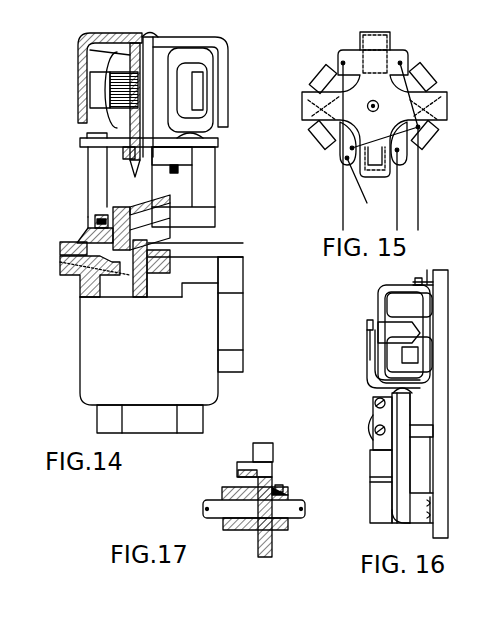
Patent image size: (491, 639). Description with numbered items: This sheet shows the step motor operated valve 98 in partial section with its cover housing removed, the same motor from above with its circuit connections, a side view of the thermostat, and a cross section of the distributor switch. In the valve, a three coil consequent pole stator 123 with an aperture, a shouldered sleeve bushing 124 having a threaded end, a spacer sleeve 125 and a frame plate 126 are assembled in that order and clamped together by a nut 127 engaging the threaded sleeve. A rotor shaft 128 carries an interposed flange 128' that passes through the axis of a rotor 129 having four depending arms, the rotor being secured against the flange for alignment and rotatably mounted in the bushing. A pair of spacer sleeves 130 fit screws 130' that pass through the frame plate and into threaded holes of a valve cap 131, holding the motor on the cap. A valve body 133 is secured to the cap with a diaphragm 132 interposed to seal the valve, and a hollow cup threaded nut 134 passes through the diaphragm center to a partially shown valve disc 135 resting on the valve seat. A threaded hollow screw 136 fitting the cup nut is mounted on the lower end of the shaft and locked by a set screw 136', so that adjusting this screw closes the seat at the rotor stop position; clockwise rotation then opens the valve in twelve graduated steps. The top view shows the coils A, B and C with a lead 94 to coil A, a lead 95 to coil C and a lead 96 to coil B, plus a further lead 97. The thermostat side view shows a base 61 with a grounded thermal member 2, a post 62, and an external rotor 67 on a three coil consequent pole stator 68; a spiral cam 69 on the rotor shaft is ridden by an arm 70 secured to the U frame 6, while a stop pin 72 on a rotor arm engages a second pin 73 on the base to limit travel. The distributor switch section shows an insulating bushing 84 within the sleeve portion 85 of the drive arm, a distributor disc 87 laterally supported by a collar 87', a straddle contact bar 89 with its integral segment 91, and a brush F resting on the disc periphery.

In FIG. 14, the rotor 129 is at (98, 33).
In FIG. 14, the interposed flange 128' is at (136, 23).
In FIG. 14, the shouldered sleeve bushing 124 is at (90, 50).
In FIG. 14, the rotor shaft 128 is at (97, 97).
In FIG. 14, the three coil consequent pole stator 123 is at (100, 87).
In FIG. 15, the three coil consequent pole stator 123 is at (427, 78).
In FIG. 14, the spacer sleeve 125 is at (130, 118).
In FIG. 14, the frame plate 126 is at (217, 143).
In FIG. 14, the screws 130' is at (83, 178).
In FIG. 14, the nut 127 is at (127, 153).
In FIG. 14, the spacer sleeves 130 is at (66, 204).
In FIG. 14, the hollow cup threaded nut 134 is at (83, 235).
In FIG. 14, the set screw 136' is at (201, 187).
In FIG. 14, the threaded hollow screw 136 is at (191, 217).
In FIG. 14, the valve cap 131 is at (60, 247).
In FIG. 14, the diaphragm 132 is at (62, 267).
In FIG. 14, the valve disc 135 is at (130, 283).
In FIG. 14, the valve body 133 is at (87, 332).
In FIG. 14, the step motor valve 98 is at (162, 372).
In FIG. 15, the coil B is at (407, 50).
In FIG. 15, the coil C is at (340, 153).
In FIG. 15, the coil A is at (405, 158).
In FIG. 15, the lead 96 is at (342, 197).
In FIG. 15, the lead 97 is at (418, 195).
In FIG. 15, the lead 94 is at (397, 202).
In FIG. 15, the lead 95 is at (367, 203).
In FIG. 16, the base 61 is at (442, 323).
In FIG. 16, the second pin 73 is at (428, 277).
In FIG. 16, the stop pin 72 is at (417, 282).
In FIG. 16, the external rotor 67 is at (382, 297).
In FIG. 16, the three coil consequent pole stator 68 is at (410, 353).
In FIG. 16, the spiral cam 69 is at (368, 325).
In FIG. 16, the arm 70 is at (370, 377).
In FIG. 16, the post 62 is at (420, 422).
In FIG. 16, the thermal member 2 is at (377, 457).
In FIG. 16, the U frame 6 is at (408, 517).
In FIG. 17, the brush F is at (273, 447).
In FIG. 17, the straddle contact bar 89 is at (270, 470).
In FIG. 17, the segment 91 is at (238, 475).
In FIG. 17, the collar 87' is at (273, 495).
In FIG. 17, the insulating bushing 84 is at (225, 523).
In FIG. 17, the sleeve portion 85 is at (247, 530).
In FIG. 17, the distributor disc 87 is at (277, 517).